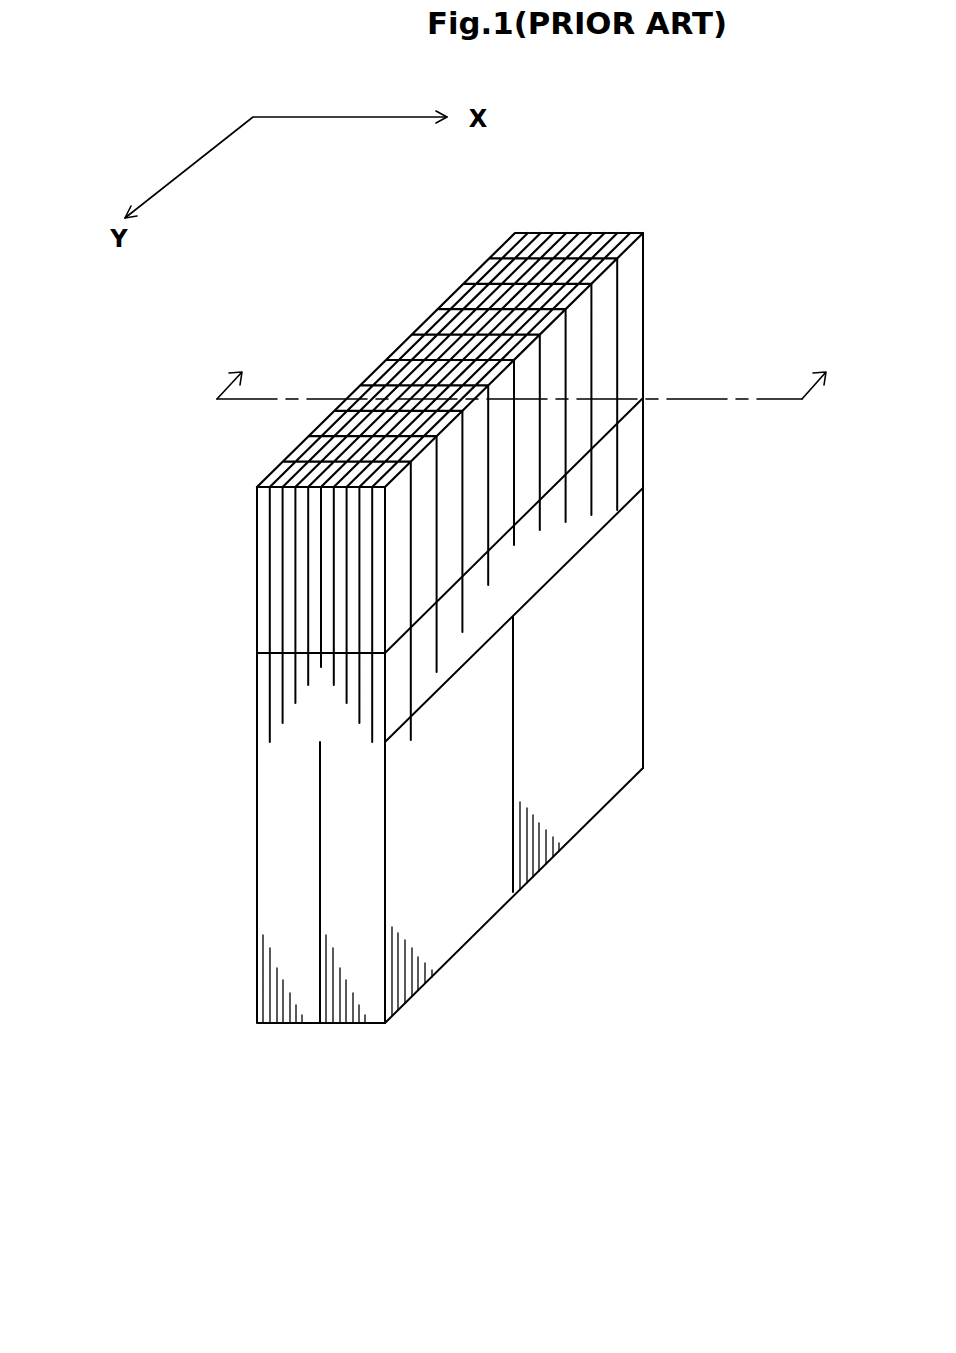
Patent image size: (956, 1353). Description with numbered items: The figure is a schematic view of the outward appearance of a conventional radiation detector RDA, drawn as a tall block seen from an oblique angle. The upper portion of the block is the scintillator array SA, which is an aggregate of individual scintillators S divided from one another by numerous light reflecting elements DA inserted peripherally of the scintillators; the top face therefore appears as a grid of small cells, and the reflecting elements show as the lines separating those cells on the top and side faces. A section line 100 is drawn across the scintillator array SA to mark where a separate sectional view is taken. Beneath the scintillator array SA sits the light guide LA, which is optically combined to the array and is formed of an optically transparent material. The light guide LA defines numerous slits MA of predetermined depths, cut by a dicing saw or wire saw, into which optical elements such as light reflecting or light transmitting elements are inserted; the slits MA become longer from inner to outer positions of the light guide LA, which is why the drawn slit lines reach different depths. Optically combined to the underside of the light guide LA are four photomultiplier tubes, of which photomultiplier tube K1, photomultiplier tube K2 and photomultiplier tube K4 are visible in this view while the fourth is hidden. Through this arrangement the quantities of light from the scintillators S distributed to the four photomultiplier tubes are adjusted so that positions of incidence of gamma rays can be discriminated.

The radiation detector RDA is at (575, 209).
The scintillator S is at (637, 233).
The scintillator array SA is at (409, 318).
The light reflecting element DA is at (618, 334).
The section line 100 is at (537, 369).
The light guide LA is at (630, 463).
The slit MA is at (268, 706).
The photomultiplier tube K1 is at (308, 972).
The photomultiplier tube K2 is at (450, 933).
The photomultiplier tube K4 is at (632, 731).